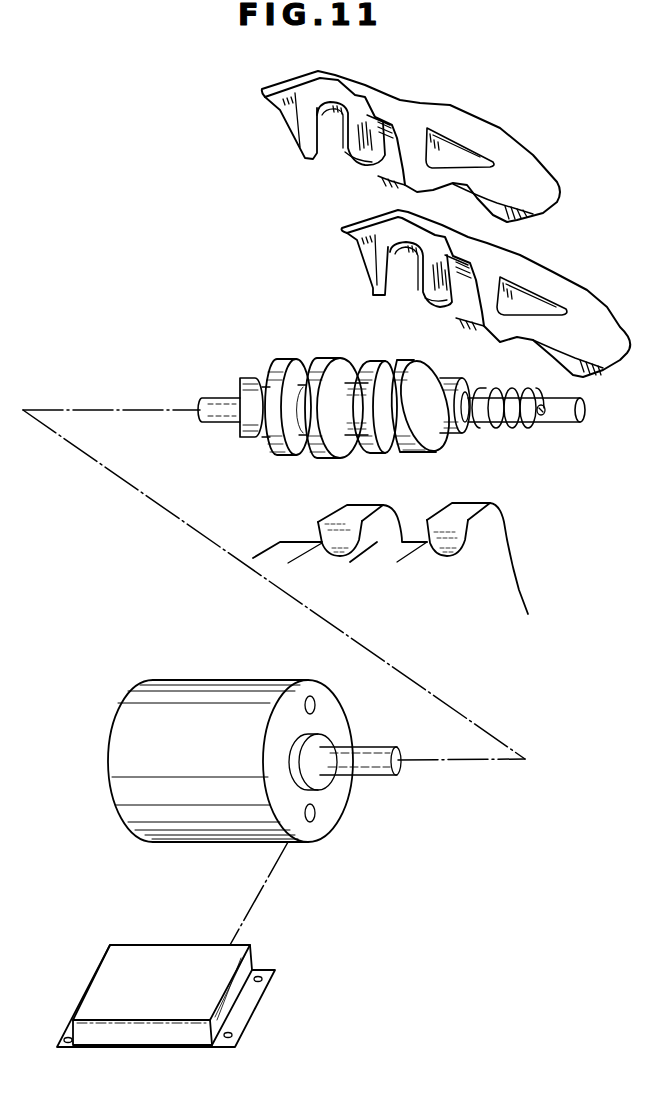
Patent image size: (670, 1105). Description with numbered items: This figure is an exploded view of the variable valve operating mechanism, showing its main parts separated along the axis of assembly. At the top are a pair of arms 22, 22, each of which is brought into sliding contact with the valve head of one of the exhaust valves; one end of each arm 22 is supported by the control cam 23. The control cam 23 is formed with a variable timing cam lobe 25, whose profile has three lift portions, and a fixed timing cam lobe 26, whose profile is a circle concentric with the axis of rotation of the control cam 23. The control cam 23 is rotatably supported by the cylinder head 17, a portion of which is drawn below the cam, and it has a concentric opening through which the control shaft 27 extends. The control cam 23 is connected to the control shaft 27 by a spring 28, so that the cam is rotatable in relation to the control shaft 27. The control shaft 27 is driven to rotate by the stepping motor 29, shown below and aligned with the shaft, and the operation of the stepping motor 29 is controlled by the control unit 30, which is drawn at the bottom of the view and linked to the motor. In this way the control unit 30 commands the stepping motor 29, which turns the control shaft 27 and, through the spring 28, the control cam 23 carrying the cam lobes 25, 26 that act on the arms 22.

The cylinder head 17 is at (320, 543).
The arm 22 is at (533, 155).
The control cam 23 is at (253, 373).
The variable timing cam lobe 25 is at (387, 455).
The fixed timing cam lobe 26 is at (315, 357).
The control shaft 27 is at (203, 398).
The spring 28 is at (527, 430).
The stepping motor 29 is at (212, 685).
The control unit 30 is at (148, 945).